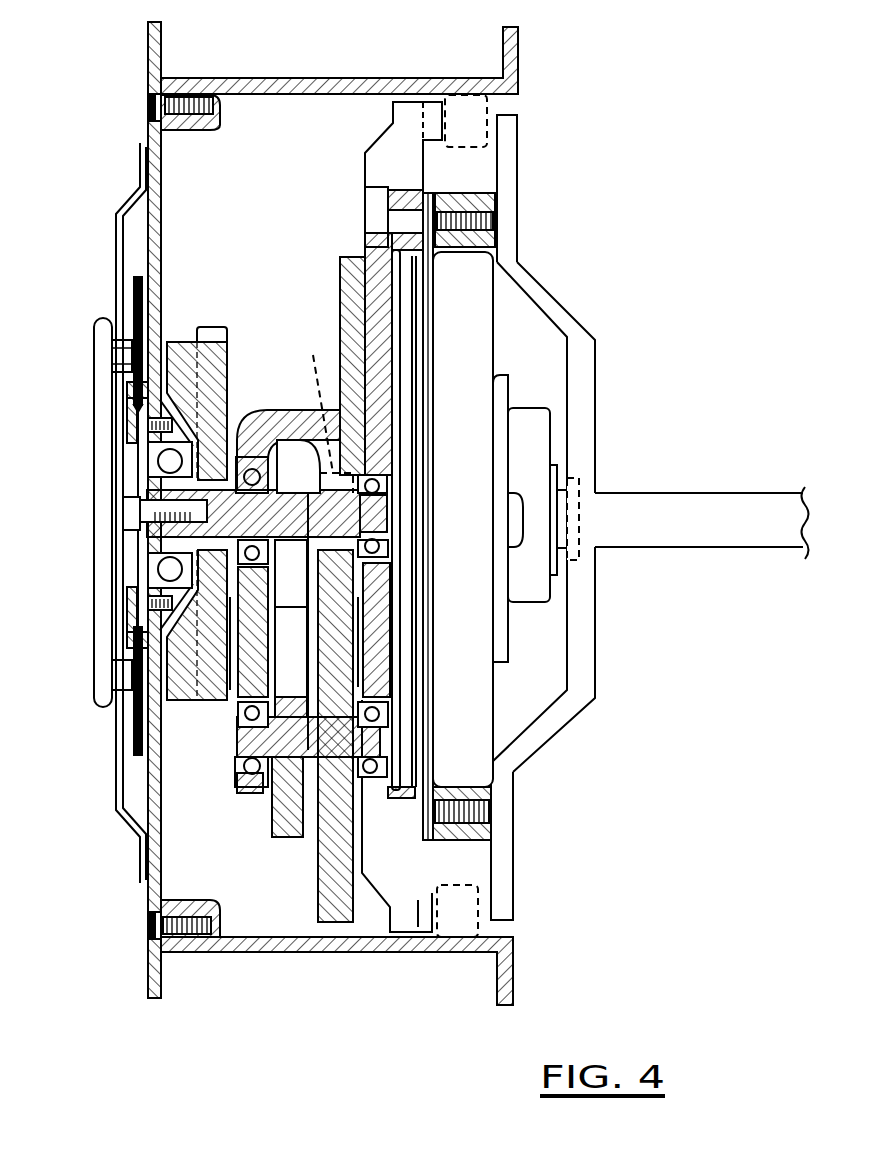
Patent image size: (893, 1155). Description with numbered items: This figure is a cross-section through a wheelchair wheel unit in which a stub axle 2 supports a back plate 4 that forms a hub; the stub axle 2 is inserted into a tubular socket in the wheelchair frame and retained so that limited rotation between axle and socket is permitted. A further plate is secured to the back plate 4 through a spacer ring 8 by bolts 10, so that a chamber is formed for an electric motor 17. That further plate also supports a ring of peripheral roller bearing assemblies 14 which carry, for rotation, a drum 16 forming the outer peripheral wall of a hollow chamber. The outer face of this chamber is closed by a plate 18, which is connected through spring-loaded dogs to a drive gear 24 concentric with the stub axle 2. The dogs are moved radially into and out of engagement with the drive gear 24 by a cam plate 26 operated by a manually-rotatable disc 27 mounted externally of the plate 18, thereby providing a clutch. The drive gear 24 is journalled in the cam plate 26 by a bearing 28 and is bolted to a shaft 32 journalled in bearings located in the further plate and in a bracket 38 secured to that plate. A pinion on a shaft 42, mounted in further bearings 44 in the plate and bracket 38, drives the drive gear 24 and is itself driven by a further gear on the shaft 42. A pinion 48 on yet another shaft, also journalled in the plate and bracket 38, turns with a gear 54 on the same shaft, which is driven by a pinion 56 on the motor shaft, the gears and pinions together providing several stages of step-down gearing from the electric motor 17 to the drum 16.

The stub axle 2 is at (708, 493).
The back plate 4 is at (595, 415).
The spacer ring 8 is at (465, 197).
The bolts 10 is at (373, 197).
The peripheral roller bearing assemblies 14 is at (487, 105).
The drum 16 is at (288, 78).
The electric motor 17 is at (490, 318).
The plate 18 is at (161, 238).
The drive gear 24 is at (227, 348).
The cam plate 26 is at (112, 710).
The manually-rotatable disc 27 is at (94, 430).
The bearing 28 is at (148, 560).
The shaft 32 is at (280, 412).
The bracket 38 is at (262, 420).
The shaft 42 is at (237, 750).
The bearings 44 is at (134, 740).
The pinion 48 is at (290, 775).
The gear 54 is at (318, 867).
The pinion 56 is at (325, 535).